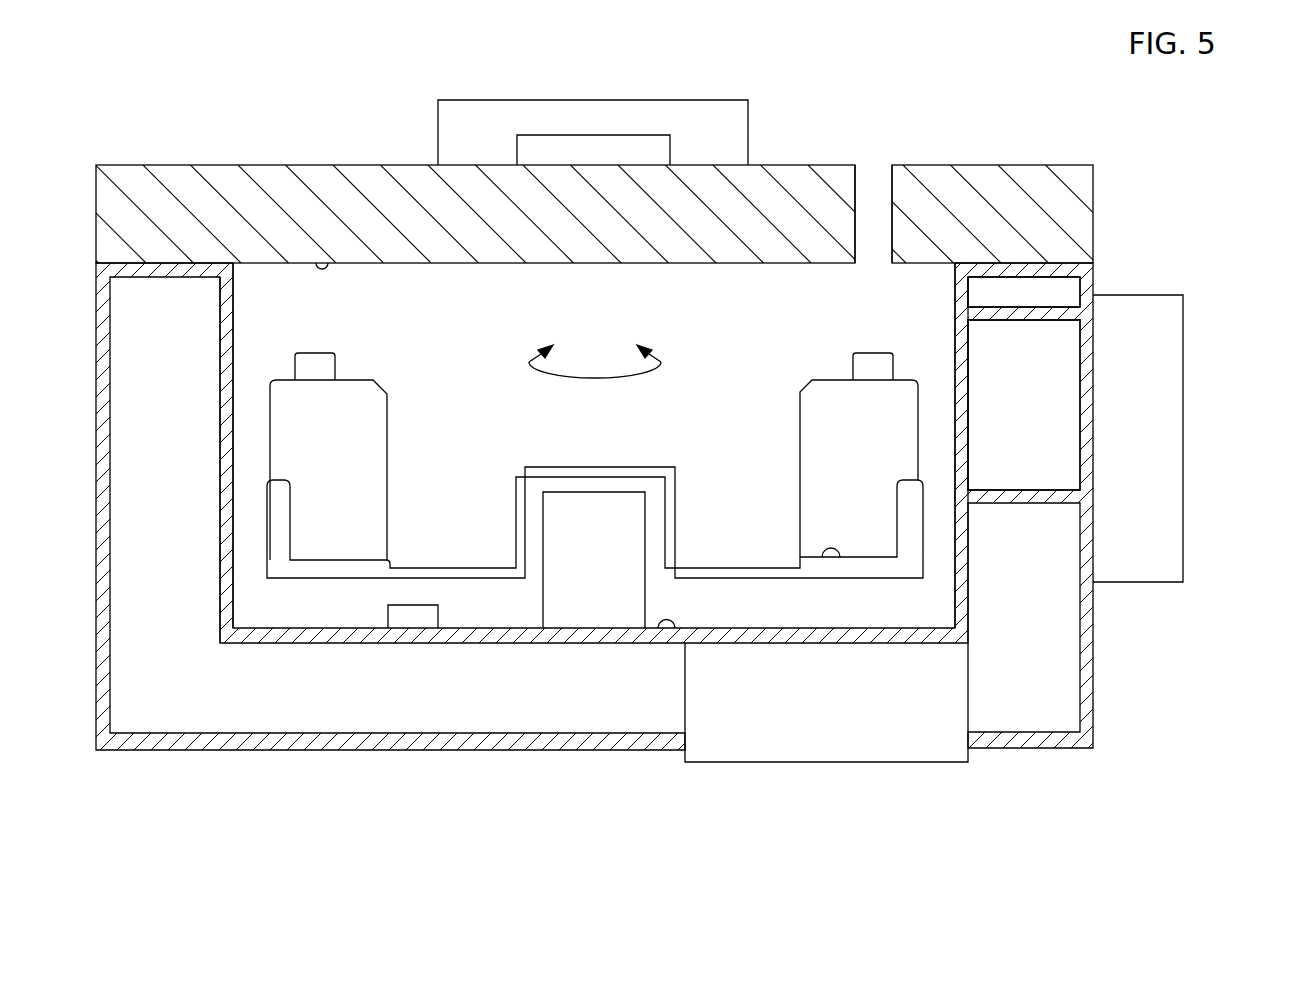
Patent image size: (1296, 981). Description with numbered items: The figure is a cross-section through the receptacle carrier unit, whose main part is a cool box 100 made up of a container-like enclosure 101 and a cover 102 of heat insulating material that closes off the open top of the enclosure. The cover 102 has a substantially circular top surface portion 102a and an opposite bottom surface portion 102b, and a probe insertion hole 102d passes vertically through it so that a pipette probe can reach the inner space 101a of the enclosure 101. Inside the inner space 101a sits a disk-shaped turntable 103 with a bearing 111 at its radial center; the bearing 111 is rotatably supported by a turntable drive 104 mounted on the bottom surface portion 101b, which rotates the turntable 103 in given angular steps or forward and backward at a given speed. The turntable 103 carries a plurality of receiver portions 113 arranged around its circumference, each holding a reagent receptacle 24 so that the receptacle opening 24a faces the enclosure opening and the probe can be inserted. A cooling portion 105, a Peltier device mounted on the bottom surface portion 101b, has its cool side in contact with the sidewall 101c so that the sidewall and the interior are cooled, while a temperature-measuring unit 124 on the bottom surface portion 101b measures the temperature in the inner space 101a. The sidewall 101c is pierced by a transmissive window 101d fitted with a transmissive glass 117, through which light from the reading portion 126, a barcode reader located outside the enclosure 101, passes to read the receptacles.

The cool box 100 is at (1212, 165).
The enclosure 101 is at (1093, 282).
The inner space 101a is at (943, 553).
The bottom surface portion 101b is at (660, 628).
The sidewall 101c is at (234, 318).
The transmissive window 101d is at (1044, 323).
The cover 102 is at (1093, 207).
The top surface portion 102a is at (993, 165).
The bottom surface portion 102b is at (328, 262).
The probe insertion hole 102d is at (890, 180).
The turntable 103 is at (340, 578).
The turntable drive 104 is at (567, 595).
The cooling portion 105 is at (951, 755).
The bearing 111 is at (643, 467).
The receiver portion 113 is at (826, 557).
The transmissive glass 117 is at (970, 452).
The temperature-measuring unit 124 is at (418, 618).
The reading portion 126 is at (1172, 353).
The reagent receptacle 24 is at (830, 398).
The opening 24a is at (876, 353).